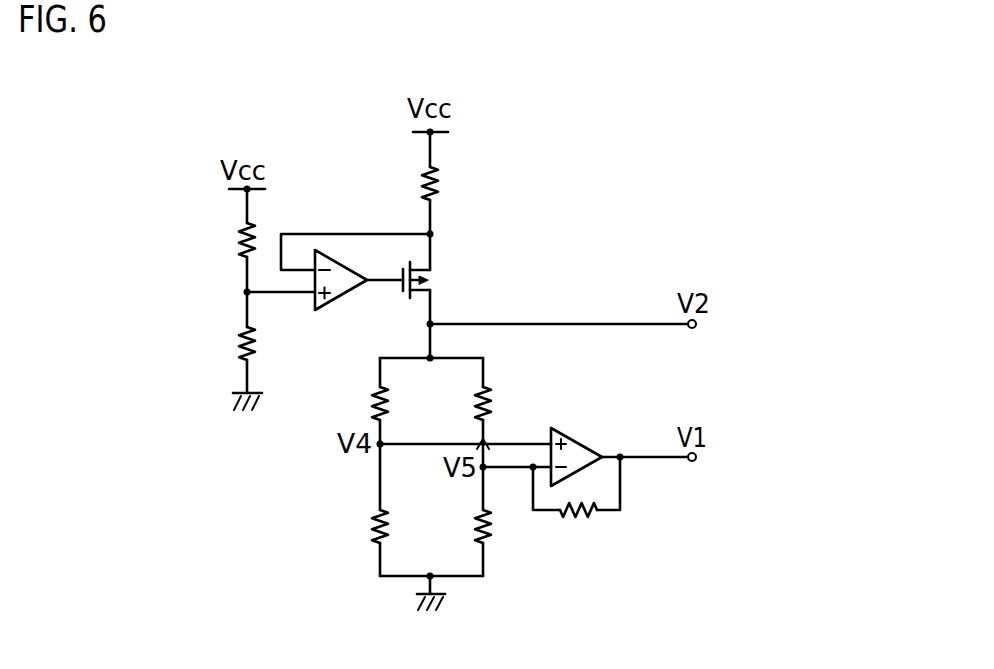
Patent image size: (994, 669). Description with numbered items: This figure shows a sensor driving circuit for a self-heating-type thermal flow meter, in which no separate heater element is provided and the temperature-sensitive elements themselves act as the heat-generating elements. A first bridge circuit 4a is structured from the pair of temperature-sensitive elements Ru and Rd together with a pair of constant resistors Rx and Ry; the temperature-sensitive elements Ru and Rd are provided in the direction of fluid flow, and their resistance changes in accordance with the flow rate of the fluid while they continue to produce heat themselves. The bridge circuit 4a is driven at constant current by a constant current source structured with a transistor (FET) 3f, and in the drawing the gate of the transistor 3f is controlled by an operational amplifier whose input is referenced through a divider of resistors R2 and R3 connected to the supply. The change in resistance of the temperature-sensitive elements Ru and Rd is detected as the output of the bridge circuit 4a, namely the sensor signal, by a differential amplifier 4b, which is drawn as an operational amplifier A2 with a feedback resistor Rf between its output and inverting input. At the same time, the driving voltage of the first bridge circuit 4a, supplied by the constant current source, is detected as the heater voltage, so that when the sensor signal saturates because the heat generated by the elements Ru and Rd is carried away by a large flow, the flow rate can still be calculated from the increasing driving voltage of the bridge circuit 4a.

The transistor (FET) 3f is at (443, 281).
The first bridge circuit 4a is at (448, 454).
The differential amplifier 4b is at (538, 466).
The operational amplifier A2 is at (580, 439).
The resistor R2 is at (227, 241).
The resistor R3 is at (227, 344).
The temperature-sensitive element Ru is at (360, 404).
The constant resistor Rx is at (464, 404).
The temperature-sensitive element Rd is at (361, 527).
The constant resistor Ry is at (464, 527).
The feedback resistor Rf is at (576, 505).